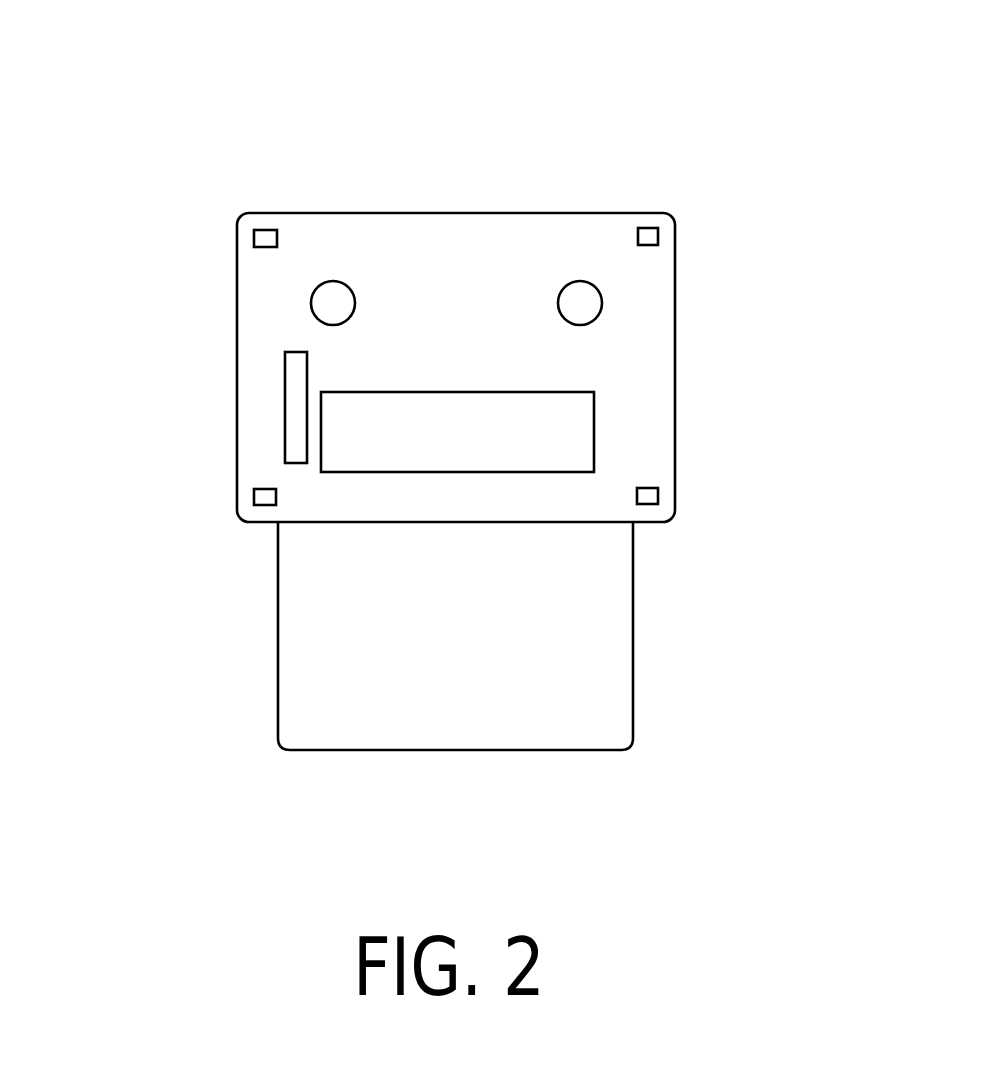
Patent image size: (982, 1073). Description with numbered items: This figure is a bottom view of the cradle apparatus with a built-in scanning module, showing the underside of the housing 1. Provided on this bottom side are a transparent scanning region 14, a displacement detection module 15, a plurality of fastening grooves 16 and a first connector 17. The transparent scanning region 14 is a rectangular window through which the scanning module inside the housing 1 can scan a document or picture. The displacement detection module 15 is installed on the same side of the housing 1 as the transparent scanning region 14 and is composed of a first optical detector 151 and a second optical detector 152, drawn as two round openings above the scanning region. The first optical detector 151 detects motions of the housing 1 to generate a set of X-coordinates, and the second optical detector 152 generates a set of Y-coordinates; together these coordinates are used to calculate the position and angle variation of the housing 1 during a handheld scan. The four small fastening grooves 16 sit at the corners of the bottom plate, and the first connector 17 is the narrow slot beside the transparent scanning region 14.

The housing 1 is at (478, 375).
The transparent scanning region 14 is at (577, 443).
The displacement detection module 15 is at (466, 162).
The first optical detector 151 is at (333, 302).
The second optical detector 152 is at (590, 196).
The fastening grooves 16 is at (265, 241).
The first connector 17 is at (293, 393).